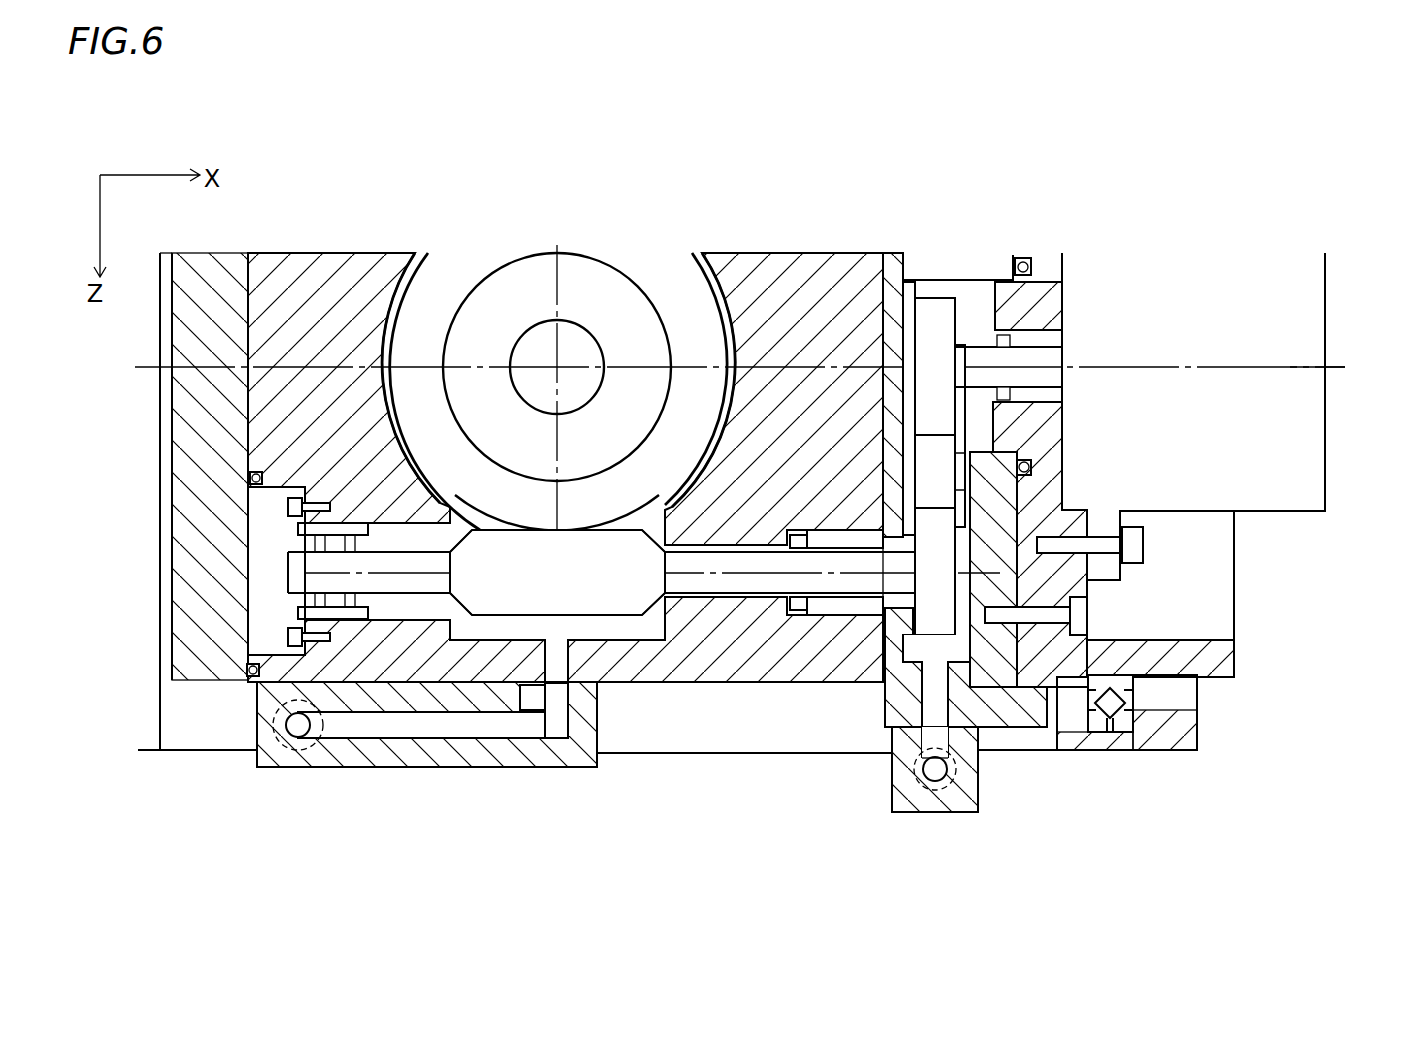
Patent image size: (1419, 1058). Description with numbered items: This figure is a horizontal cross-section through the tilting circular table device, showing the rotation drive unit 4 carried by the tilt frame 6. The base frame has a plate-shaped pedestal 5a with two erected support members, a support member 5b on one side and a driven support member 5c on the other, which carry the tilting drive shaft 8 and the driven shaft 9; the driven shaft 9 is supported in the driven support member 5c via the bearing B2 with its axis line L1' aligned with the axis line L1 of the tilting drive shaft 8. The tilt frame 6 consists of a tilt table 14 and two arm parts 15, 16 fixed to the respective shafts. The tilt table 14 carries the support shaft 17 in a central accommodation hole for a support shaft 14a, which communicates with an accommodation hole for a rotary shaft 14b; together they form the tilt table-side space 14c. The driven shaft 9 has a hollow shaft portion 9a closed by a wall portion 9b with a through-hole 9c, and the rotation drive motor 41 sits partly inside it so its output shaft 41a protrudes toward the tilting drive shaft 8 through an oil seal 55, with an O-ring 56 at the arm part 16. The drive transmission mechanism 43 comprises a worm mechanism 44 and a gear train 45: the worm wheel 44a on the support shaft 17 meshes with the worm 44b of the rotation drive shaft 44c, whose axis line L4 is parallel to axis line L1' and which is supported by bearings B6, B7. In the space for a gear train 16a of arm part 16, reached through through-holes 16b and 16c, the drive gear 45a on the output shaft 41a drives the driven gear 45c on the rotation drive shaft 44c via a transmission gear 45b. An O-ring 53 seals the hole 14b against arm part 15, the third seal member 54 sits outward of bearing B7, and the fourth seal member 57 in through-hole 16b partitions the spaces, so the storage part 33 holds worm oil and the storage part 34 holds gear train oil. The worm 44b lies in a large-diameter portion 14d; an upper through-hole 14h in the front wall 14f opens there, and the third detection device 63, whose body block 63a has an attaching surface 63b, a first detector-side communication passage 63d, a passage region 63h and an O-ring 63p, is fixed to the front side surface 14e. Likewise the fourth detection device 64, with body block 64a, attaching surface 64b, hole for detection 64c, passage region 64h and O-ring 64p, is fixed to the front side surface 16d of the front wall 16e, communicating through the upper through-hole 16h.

The rotation drive unit 4 is at (1096, 85).
The pedestal 5a is at (186, 752).
The support member 5b is at (162, 715).
The driven support member 5c is at (1197, 738).
The tilt frame 6 is at (751, 219).
The tilting drive shaft 8 is at (170, 463).
The driven shaft 9 is at (1308, 595).
The shaft portion 9a is at (1215, 658).
The wall portion 9b is at (1100, 590).
The through-hole 9c is at (1090, 280).
The tilt table 14 is at (262, 408).
The accommodation hole for a support shaft 14a is at (404, 330).
The accommodation hole for a rotary shaft 14b is at (392, 330).
The tilt table-side space 14c is at (367, 148).
The large-diameter portion for a worm 14d is at (468, 662).
The front side surface 14e is at (648, 672).
The front wall 14f is at (603, 700).
The upper through-hole 14h is at (552, 695).
The arm part 15 is at (252, 573).
The arm part 16 is at (1062, 700).
The space for a gear train 16a is at (1087, 523).
The through-hole 16b is at (886, 640).
The through-hole 16c is at (1005, 415).
The front side surface 16d is at (1038, 740).
The front wall 16e is at (990, 740).
The upper through-hole 16h is at (930, 745).
The support shaft 17 is at (598, 276).
The storage part 33 is at (562, 740).
The storage part 34 is at (1100, 740).
The rotation drive motor 41 is at (1312, 513).
The output shaft 41a is at (976, 280).
The drive transmission mechanism 43 is at (905, 280).
The worm mechanism 44 is at (658, 838).
The worm wheel 44a is at (722, 600).
The worm 44b is at (668, 605).
The rotation drive shaft 44c is at (772, 610).
The gear train 45 is at (895, 150).
The drive gear 45a is at (908, 278).
The transmission gear 45b is at (946, 296).
The driven gear 45c is at (967, 343).
The O-ring 53 is at (250, 480).
The third seal member 54 is at (797, 512).
The oil seal 55 is at (1140, 282).
The O-ring 56 is at (1032, 266).
The fourth seal member 57 is at (882, 610).
The third detection device 63 is at (197, 862).
The body block 63a is at (288, 728).
The attaching surface 63b is at (315, 745).
The first detector-side communication passage 63d is at (392, 770).
The hinge slot 63h is at (300, 738).
The O-ring 63p is at (502, 740).
The fourth detection device 64 is at (915, 898).
The body block 64a is at (972, 800).
The attaching surface 64b is at (893, 760).
The hole for detection 64c is at (947, 790).
The hinge slot 64h is at (935, 800).
The O-ring 64p is at (975, 790).
The bearing B2 is at (1197, 700).
The bearing B6 is at (362, 540).
The bearing B7 is at (767, 543).
The axis line L1 is at (715, 349).
The axis line L1' is at (1345, 346).
The axis line L4 is at (252, 612).